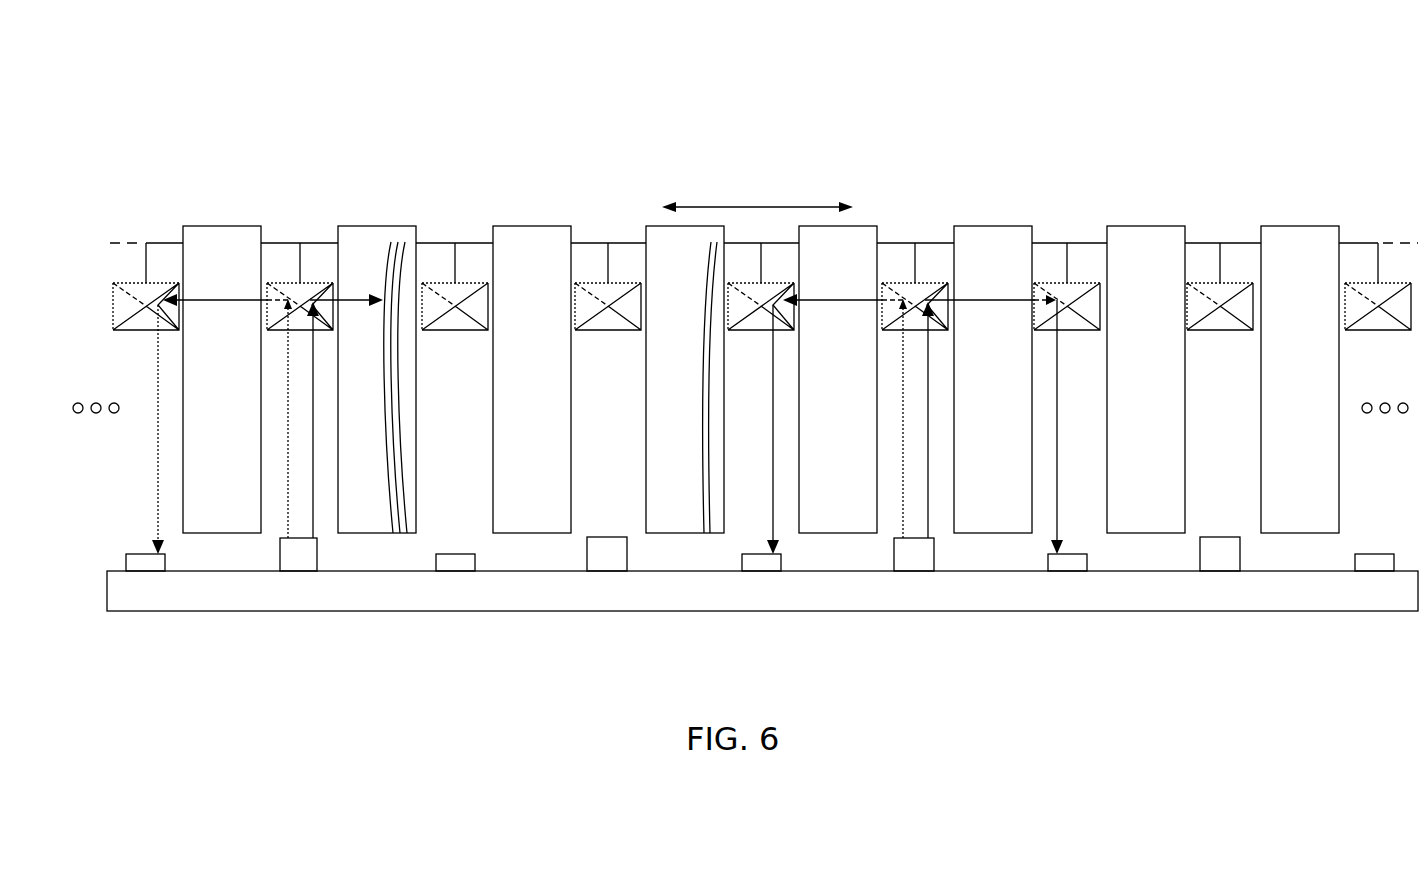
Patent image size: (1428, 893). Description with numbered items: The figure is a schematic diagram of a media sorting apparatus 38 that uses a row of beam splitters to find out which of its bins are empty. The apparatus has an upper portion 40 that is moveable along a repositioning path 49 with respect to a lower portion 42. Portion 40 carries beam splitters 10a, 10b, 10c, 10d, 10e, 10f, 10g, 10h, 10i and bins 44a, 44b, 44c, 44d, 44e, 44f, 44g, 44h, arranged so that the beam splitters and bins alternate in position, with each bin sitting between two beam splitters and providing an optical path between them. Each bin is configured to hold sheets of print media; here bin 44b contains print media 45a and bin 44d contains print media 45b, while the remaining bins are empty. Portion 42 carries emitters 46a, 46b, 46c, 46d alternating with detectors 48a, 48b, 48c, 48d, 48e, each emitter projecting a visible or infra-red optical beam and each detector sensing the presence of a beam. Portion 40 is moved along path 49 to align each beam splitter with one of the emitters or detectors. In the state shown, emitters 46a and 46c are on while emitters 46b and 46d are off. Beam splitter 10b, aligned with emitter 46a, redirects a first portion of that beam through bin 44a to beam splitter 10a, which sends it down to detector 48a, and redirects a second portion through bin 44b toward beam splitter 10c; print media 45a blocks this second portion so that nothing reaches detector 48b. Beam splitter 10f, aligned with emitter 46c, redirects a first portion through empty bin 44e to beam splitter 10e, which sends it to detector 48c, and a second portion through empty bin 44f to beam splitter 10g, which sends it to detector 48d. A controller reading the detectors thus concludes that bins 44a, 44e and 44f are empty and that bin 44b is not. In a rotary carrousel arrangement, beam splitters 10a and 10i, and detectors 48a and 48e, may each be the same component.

The media sorting apparatus 38 is at (355, 100).
The portion 40 is at (620, 243).
The repositioning path 49 is at (768, 205).
The portion 42 is at (528, 611).
The beam splitter 10a is at (146, 304).
The beam splitter 10b is at (287, 282).
The beam splitter 10c is at (428, 330).
The beam splitter 10d is at (581, 330).
The beam splitter 10e is at (772, 283).
The beam splitter 10f is at (926, 283).
The beam splitter 10g is at (1080, 283).
The beam splitter 10h is at (1193, 330).
The beam splitter 10i is at (1352, 330).
The bin 44a is at (233, 529).
The bin 44b is at (388, 529).
The bin 44c is at (543, 529).
The bin 44d is at (696, 529).
The bin 44e is at (849, 529).
The bin 44f is at (1000, 529).
The bin 44g is at (1157, 529).
The bin 44h is at (1311, 529).
The print media 45a is at (398, 407).
The print media 45b is at (703, 305).
The emitter 46a is at (311, 573).
The emitter 46b is at (620, 573).
The emitter 46c is at (922, 573).
The emitter 46d is at (1232, 573).
The detector 48a is at (138, 573).
The detector 48b is at (460, 573).
The detector 48c is at (770, 573).
The detector 48d is at (1077, 573).
The detector 48e is at (1387, 573).